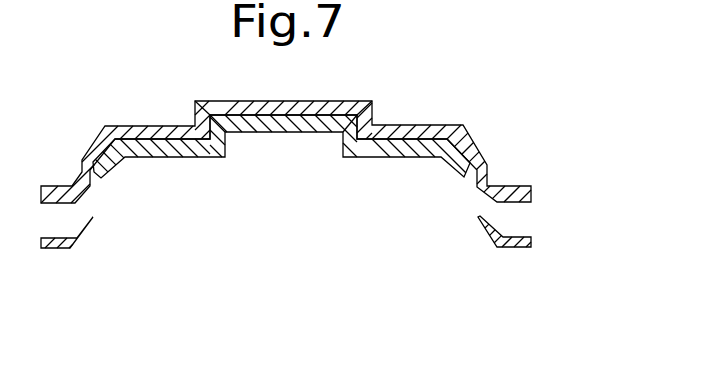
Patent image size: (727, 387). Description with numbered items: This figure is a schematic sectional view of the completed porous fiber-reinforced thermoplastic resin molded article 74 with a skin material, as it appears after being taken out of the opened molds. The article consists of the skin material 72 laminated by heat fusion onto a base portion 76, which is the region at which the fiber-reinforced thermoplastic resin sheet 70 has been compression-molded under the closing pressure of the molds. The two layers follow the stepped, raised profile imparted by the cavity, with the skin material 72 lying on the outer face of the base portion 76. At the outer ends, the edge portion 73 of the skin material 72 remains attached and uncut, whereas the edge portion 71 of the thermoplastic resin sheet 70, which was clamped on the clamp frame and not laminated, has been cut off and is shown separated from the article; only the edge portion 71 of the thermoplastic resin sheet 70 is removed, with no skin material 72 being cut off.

The thermoplastic resin sheet 70 is at (464, 174).
The edge portion of the thermoplastic resin sheet 71 is at (532, 237).
The skin material 72 is at (474, 126).
The edge portion of the skin material 73 is at (532, 188).
The fiber-reinforced thermoplastic resin molded article 74 is at (397, 117).
The base portion 76 is at (287, 133).